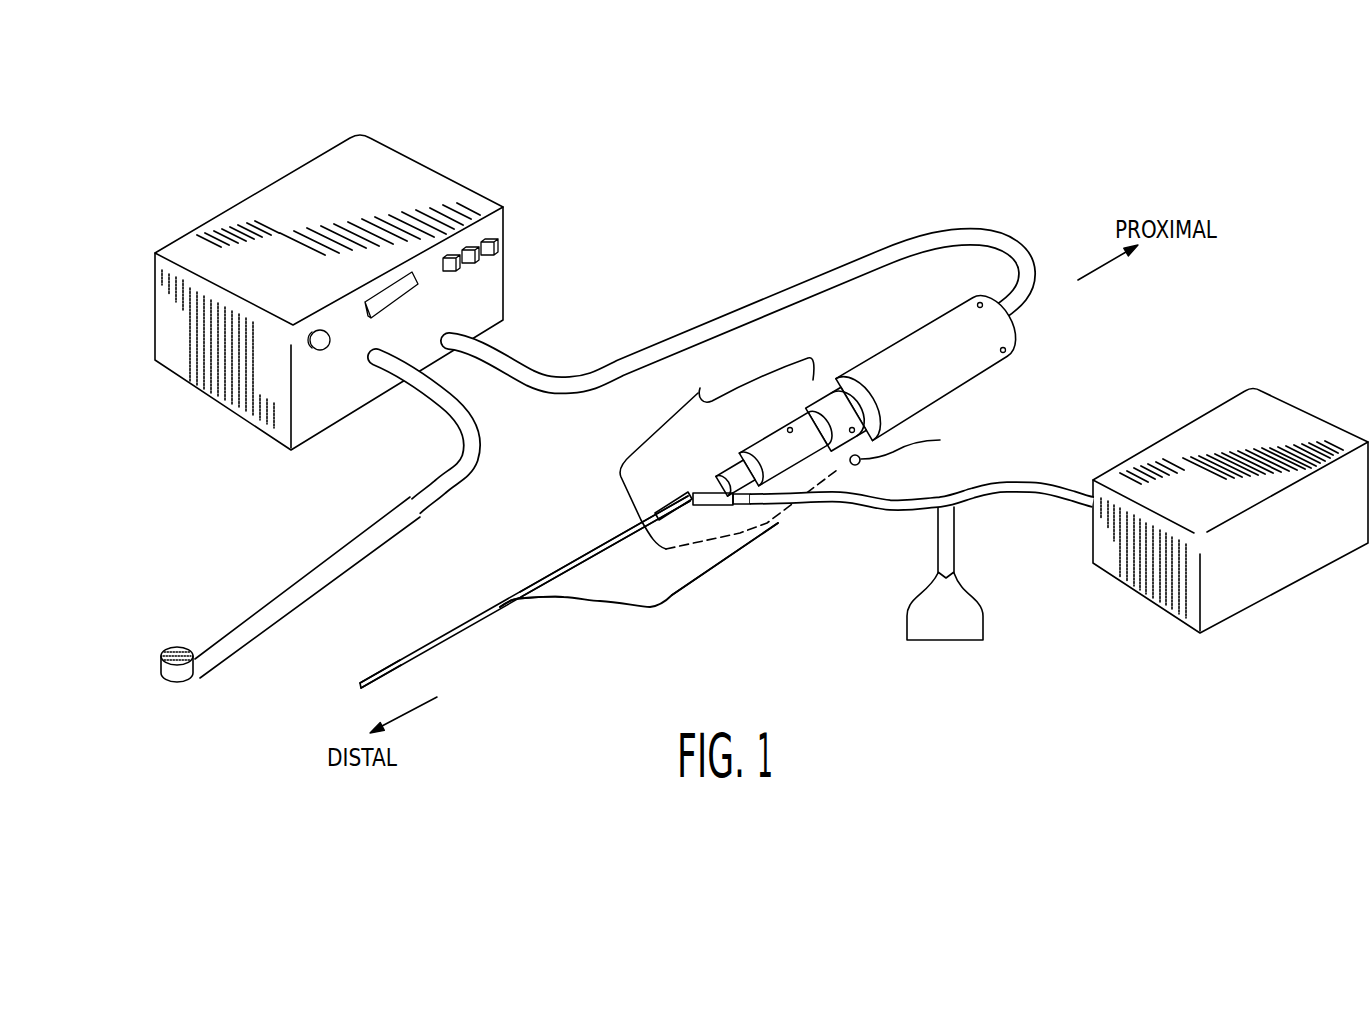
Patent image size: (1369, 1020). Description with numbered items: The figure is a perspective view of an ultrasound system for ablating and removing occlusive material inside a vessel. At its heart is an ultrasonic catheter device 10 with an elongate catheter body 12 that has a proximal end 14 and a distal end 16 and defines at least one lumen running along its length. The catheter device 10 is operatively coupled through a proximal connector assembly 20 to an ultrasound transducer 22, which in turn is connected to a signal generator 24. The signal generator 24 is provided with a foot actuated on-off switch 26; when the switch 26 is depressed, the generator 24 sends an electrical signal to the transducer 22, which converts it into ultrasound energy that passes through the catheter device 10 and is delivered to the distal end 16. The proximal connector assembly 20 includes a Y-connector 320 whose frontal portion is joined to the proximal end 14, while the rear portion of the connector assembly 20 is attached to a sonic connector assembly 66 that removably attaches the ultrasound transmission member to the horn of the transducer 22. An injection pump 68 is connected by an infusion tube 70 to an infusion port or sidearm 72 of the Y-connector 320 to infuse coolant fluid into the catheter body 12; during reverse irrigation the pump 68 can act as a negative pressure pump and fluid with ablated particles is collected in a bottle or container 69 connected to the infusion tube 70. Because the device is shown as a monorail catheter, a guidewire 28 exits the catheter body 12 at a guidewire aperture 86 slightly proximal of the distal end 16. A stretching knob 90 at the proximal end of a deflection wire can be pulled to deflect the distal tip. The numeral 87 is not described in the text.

The ultrasonic catheter device 10 is at (511, 562).
The catheter body 12 is at (432, 643).
The proximal end 14 is at (647, 520).
The distal end 16 is at (360, 687).
The proximal connector assembly 20 is at (690, 375).
The ultrasound transducer 22 is at (948, 330).
The signal generator 24 is at (248, 228).
The foot actuated on-off switch 26 is at (165, 652).
The guidewire 28 is at (588, 600).
The sonic connector assembly 66 is at (774, 447).
The injection pump 68 is at (1262, 412).
The bottle or container 69 is at (970, 617).
The infusion tube 70 is at (1033, 477).
The infusion port or sidearm 72 is at (710, 492).
The guidewire aperture 86 is at (504, 608).
The tube proximal portion 87 is at (744, 526).
The stretching knob 90 is at (910, 443).
The Y-connector 320 is at (668, 506).